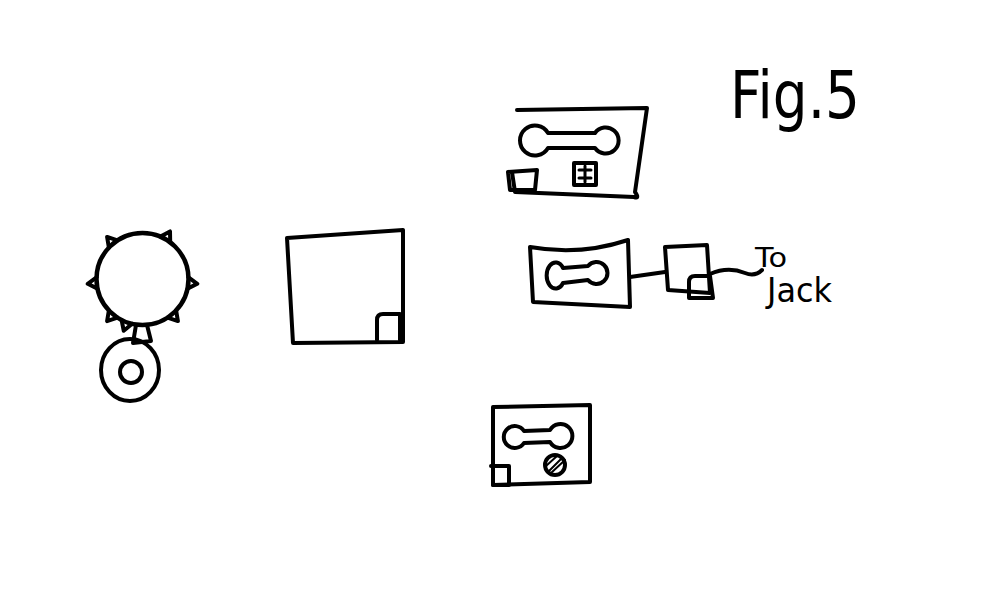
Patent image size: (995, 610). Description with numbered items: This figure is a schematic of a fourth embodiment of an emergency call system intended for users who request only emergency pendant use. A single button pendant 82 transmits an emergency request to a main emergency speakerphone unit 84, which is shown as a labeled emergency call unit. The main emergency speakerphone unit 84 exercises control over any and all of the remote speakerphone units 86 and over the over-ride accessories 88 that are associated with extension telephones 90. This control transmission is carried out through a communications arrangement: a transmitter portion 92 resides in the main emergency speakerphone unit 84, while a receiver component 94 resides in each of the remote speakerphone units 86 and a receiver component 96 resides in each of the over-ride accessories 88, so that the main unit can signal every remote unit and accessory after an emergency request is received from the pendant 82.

The single button pendant 82 is at (105, 367).
The main emergency speakerphone unit 84 is at (311, 344).
The remote speakerphone unit 86 is at (511, 132).
The over-ride accessory 88 is at (688, 295).
The extension telephone 90 is at (565, 306).
The transmitter portion 92 is at (401, 326).
The receiver component 94 is at (519, 191).
The receiver component 96 is at (702, 298).